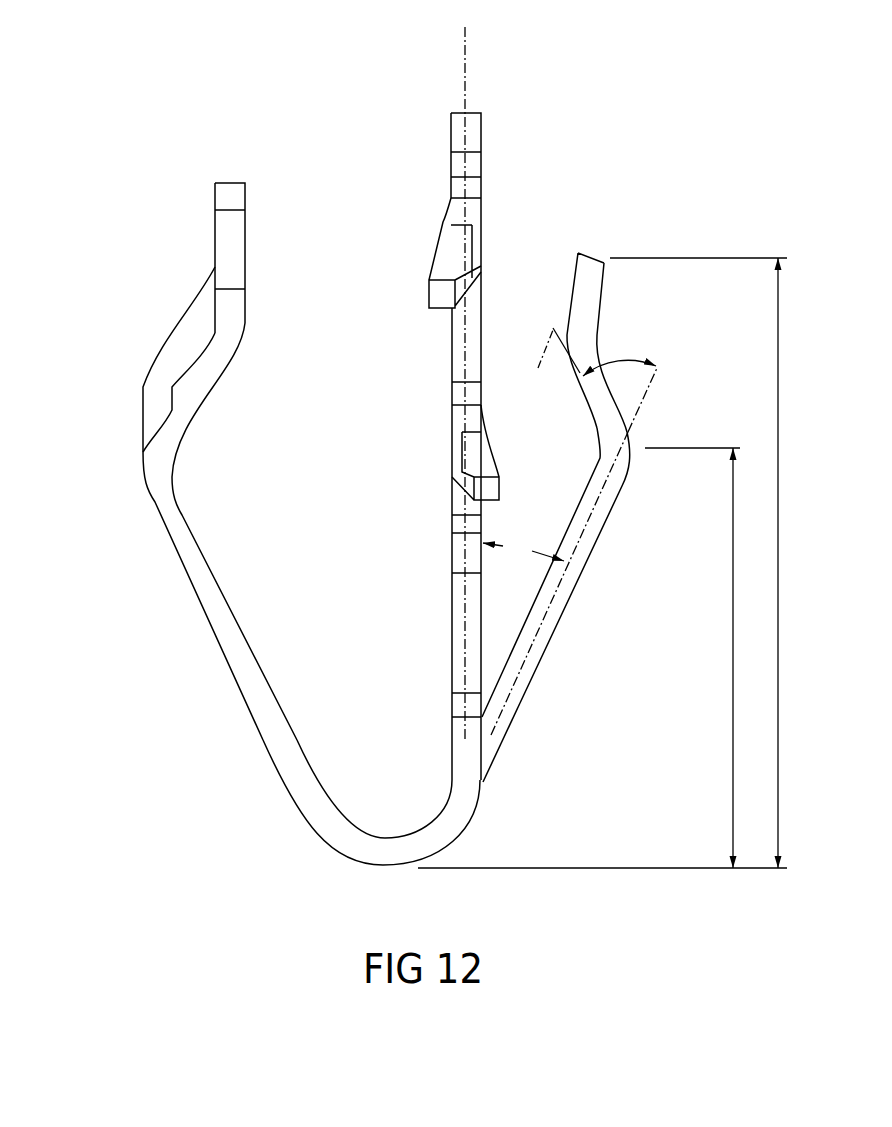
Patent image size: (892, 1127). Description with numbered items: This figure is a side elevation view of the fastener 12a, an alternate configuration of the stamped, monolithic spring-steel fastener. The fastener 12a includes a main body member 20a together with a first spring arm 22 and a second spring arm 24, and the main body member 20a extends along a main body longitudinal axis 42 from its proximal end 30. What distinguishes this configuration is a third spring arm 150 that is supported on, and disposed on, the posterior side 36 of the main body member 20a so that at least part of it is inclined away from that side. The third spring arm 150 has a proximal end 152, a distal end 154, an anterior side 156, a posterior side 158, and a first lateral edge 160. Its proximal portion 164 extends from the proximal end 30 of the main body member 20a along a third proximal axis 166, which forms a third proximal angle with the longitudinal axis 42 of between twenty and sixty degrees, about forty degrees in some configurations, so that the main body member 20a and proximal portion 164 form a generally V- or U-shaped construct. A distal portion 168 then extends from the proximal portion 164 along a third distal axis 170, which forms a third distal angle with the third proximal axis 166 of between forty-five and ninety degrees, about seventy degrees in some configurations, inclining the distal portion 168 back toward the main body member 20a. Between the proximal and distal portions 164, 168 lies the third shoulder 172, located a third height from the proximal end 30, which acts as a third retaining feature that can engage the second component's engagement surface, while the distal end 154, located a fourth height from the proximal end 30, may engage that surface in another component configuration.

The fastener 12a is at (578, 147).
The main body member 20a is at (423, 203).
The first spring arm 22 is at (203, 624).
The second spring arm 24 is at (138, 365).
The proximal end 30 is at (387, 867).
The posterior side 36 is at (483, 313).
The main body longitudinal axis 42 is at (463, 53).
The third spring arm 150 is at (648, 433).
The proximal end 152 is at (480, 797).
The distal end 154 is at (590, 256).
The anterior side 156 is at (577, 507).
The posterior side 158 is at (540, 662).
The first lateral edge 160 is at (565, 578).
The proximal portion 164 is at (605, 523).
The third proximal axis 166 is at (660, 390).
The distal portion 168 is at (553, 328).
The third distal axis 170 is at (538, 368).
The third shoulder 172 is at (628, 462).